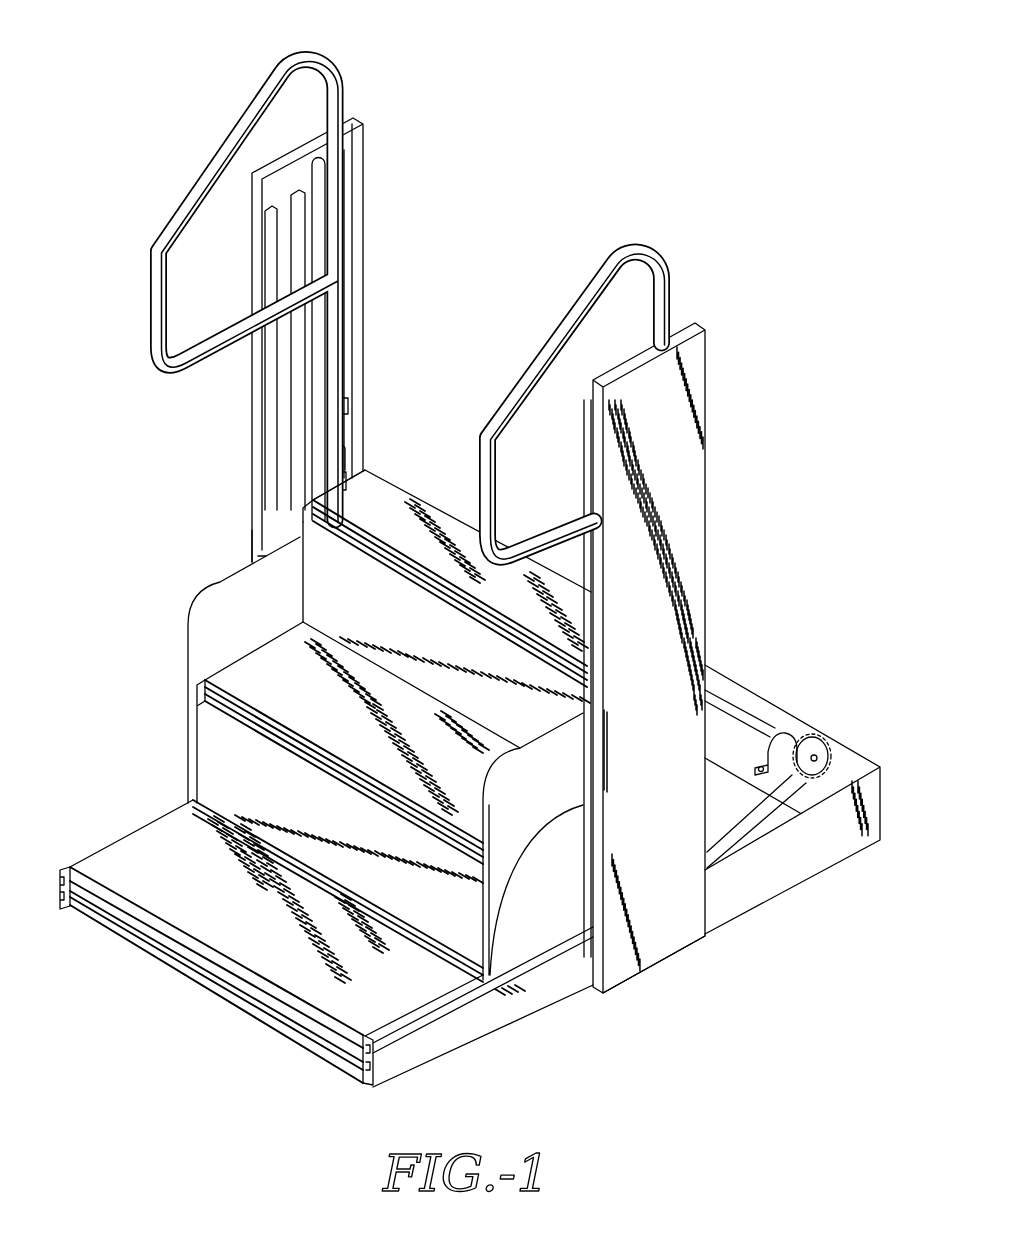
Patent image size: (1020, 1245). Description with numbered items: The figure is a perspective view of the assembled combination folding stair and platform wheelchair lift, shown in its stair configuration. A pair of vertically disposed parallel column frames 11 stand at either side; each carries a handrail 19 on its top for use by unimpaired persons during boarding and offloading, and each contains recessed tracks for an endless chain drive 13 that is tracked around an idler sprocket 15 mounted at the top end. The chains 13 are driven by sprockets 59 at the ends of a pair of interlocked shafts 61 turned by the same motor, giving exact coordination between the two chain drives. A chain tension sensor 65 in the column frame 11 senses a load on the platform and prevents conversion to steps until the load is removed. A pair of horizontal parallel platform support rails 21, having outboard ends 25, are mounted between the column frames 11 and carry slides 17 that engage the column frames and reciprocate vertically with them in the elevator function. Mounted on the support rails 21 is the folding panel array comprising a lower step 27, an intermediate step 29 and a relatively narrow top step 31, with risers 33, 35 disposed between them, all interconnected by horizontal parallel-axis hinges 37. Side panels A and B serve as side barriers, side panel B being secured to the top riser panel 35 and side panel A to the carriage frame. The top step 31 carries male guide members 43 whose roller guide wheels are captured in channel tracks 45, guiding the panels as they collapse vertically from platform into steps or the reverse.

The column frame 11 is at (364, 238).
The endless chain drive 13 is at (352, 358).
The idler sprocket 15 is at (323, 166).
The slide 17 is at (262, 540).
The handrail 19 is at (331, 56).
The platform support rail 21 is at (67, 867).
The outboard end 25 is at (364, 1085).
The lower step 27 is at (240, 950).
The intermediate step 29 is at (232, 670).
The top step 31 is at (388, 494).
The riser 33 is at (212, 735).
The top riser panel 35 is at (315, 600).
The hinge 37 is at (337, 523).
The male guide member 43 is at (338, 480).
The channel track 45 is at (336, 458).
The drive sprocket 59 is at (813, 748).
The shaft 61 is at (748, 710).
The chain tension sensor 65 is at (348, 400).
The side panel A is at (523, 948).
The side panel B is at (488, 898).